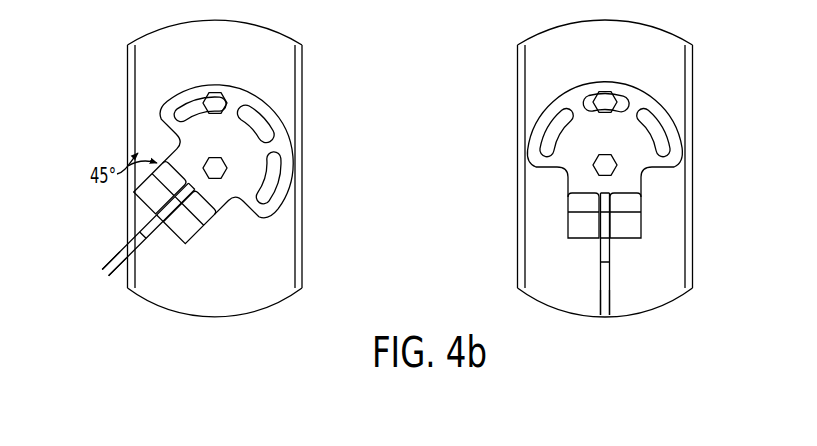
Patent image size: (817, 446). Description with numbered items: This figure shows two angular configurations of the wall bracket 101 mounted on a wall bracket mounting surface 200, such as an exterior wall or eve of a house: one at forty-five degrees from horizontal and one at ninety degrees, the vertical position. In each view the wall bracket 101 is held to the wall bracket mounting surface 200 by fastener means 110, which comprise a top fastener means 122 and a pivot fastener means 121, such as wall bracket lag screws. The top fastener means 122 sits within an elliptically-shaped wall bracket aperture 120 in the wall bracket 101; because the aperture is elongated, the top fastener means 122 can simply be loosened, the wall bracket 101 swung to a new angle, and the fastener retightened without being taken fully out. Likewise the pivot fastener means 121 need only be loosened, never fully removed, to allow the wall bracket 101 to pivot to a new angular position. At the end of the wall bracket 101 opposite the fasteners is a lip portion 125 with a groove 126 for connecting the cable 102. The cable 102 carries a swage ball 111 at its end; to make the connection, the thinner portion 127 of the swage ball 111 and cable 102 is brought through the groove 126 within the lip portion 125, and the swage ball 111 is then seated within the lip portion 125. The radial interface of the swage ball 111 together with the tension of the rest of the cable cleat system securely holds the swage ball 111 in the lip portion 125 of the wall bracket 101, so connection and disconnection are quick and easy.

The wall bracket mounting surface 200 is at (280, 72).
The fastener means 110 is at (427, 195).
The wall bracket 101 is at (198, 136).
The elliptically-shaped wall bracket aperture 120 is at (198, 102).
The pivot fastener means 121 is at (228, 167).
The top fastener means 122 is at (227, 105).
The lip portion 125 is at (219, 222).
The groove 126 is at (192, 206).
The swage ball 111 is at (182, 210).
The thinner portion 127 is at (148, 226).
The cable 102 is at (123, 274).